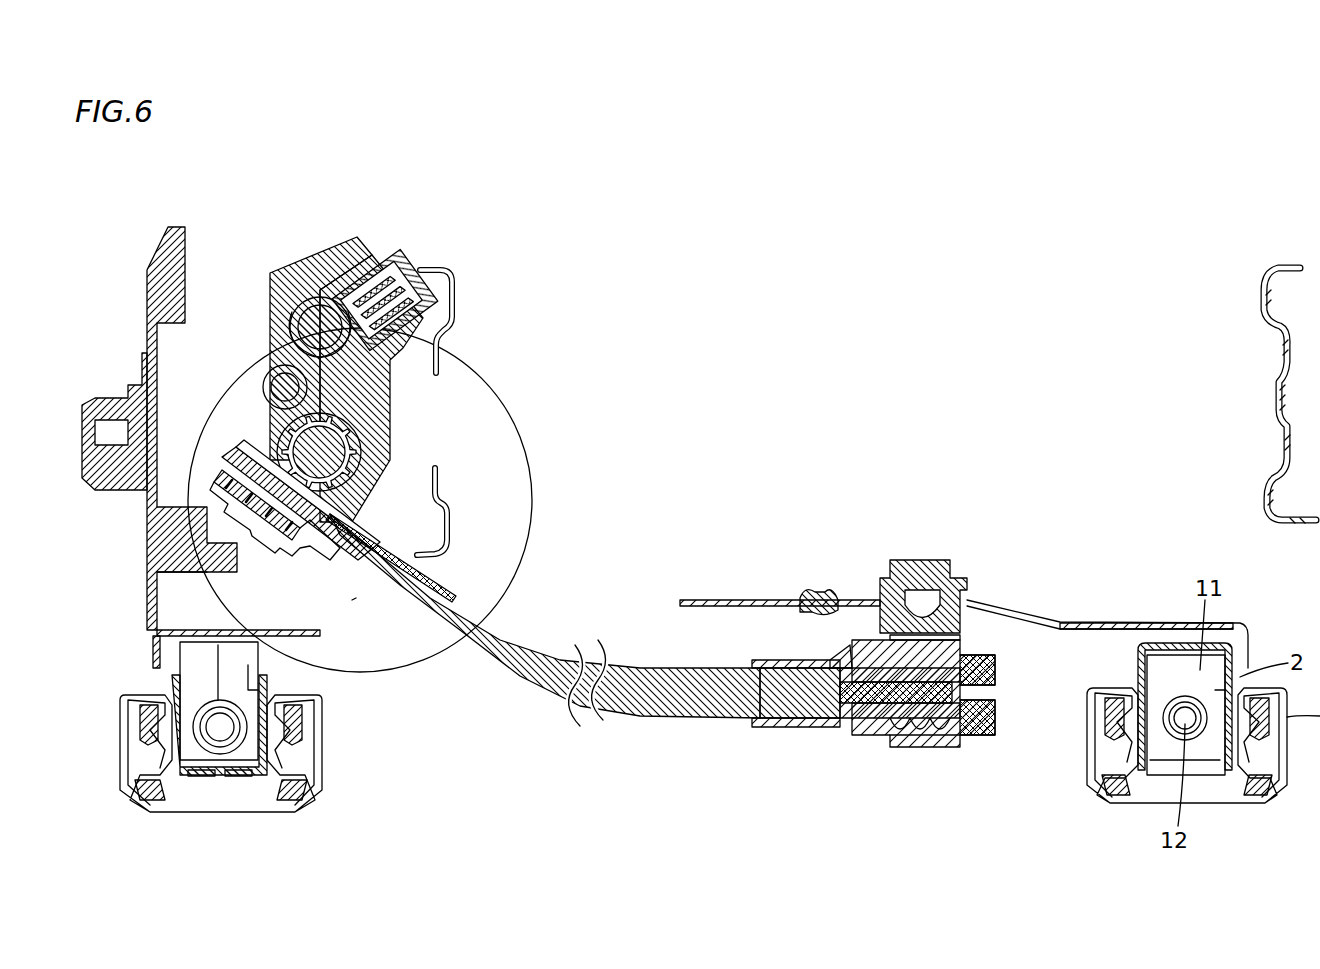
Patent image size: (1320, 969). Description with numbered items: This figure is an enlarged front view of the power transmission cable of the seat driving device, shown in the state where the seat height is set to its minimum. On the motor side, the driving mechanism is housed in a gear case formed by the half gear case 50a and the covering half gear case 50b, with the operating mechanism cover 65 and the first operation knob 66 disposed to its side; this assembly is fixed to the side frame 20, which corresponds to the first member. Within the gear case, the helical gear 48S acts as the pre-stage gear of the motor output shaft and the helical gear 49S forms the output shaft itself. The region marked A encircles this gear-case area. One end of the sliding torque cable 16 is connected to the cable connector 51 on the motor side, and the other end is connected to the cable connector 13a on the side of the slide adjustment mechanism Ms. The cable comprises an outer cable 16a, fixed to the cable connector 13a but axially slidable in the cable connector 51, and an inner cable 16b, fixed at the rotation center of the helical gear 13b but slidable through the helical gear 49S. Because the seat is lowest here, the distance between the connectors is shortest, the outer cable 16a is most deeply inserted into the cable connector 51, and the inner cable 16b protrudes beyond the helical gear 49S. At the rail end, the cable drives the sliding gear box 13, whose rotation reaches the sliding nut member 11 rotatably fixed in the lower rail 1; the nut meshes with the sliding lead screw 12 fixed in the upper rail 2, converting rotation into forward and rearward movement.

The lower rail 1 is at (320, 728).
The upper rail 2 is at (174, 690).
The sliding nut member 11 is at (188, 650).
The sliding lead screw 12 is at (218, 732).
The sliding gear box 13 is at (845, 752).
The cable connector 13a is at (815, 732).
The helical gear 13b is at (940, 735).
The sliding torque cable 16 is at (645, 730).
The outer cable 16a is at (460, 594).
The inner cable 16b is at (233, 455).
The side frame 20 is at (455, 292).
The helical gear 48S is at (340, 455).
The helical gear 49S is at (262, 537).
The half gear case 50a is at (392, 402).
The half gear case 50b is at (270, 293).
The cable connector 51 is at (352, 600).
The operating mechanism cover 65 is at (165, 292).
The first operation knob 66 is at (118, 398).
The detail region A is at (519, 411).
The slide adjustment mechanism Ms is at (912, 760).